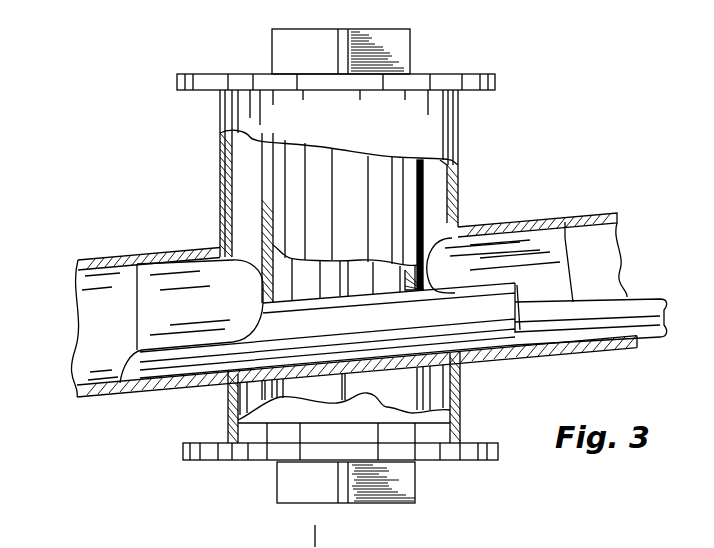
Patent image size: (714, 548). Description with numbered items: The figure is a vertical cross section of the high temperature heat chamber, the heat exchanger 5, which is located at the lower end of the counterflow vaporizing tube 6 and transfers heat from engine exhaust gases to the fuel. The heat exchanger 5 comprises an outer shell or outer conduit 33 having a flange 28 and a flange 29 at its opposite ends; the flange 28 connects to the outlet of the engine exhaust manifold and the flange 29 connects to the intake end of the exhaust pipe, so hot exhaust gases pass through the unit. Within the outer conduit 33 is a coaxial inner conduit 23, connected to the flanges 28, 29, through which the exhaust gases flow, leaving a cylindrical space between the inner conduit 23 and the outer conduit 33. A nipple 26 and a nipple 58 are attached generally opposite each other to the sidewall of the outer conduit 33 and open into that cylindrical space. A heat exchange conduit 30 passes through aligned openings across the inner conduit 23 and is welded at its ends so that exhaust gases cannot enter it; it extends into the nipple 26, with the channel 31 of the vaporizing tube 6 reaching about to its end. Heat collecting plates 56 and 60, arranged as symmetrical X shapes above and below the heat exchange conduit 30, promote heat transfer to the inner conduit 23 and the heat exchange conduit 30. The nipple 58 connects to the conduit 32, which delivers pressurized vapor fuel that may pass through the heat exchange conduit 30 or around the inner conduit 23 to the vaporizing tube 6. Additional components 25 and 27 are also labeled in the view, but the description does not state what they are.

The heat exchanger 5 is at (547, 128).
The counterflow vaporizing tube 6 is at (613, 213).
The inner conduit 23 is at (263, 386).
The inner sleeve 25 is at (436, 211).
The nipple 26 is at (503, 225).
The ferrule 27 is at (410, 193).
The flange 28 is at (473, 83).
The flange 29 is at (482, 448).
The heat exchange conduit 30 is at (588, 308).
The channel 31 is at (490, 297).
The conduit 32 is at (118, 258).
The outer conduit 33 is at (458, 138).
The heat collecting plate 56 is at (345, 28).
The nipple 58 is at (183, 258).
The heat collecting plate 60 is at (343, 503).